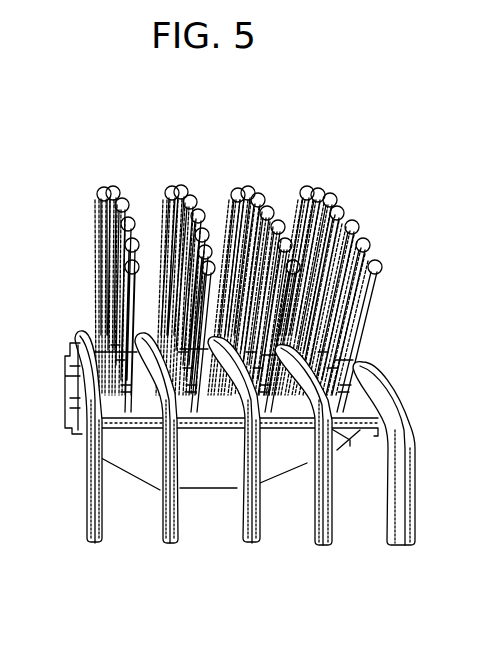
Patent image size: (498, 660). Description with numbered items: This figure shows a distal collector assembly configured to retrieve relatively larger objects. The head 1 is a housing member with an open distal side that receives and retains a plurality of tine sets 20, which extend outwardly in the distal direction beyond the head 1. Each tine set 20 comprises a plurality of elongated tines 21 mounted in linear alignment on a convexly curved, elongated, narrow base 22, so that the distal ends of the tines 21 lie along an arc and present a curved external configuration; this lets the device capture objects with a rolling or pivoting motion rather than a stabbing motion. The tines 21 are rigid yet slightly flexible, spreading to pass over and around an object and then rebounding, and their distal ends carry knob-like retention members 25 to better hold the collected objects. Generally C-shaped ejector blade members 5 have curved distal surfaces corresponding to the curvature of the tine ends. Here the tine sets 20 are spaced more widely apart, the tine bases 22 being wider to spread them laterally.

The head 1 is at (233, 380).
The ejector blade member 5 is at (93, 545).
The tine set 20 is at (305, 191).
The tine 21 is at (126, 299).
The tine base 22 is at (150, 325).
The retention member 25 is at (128, 267).